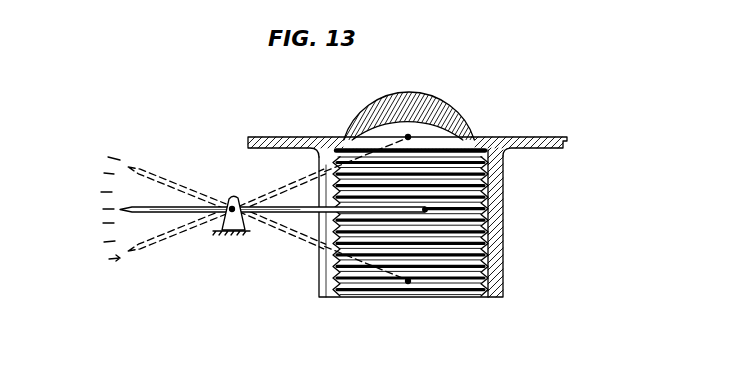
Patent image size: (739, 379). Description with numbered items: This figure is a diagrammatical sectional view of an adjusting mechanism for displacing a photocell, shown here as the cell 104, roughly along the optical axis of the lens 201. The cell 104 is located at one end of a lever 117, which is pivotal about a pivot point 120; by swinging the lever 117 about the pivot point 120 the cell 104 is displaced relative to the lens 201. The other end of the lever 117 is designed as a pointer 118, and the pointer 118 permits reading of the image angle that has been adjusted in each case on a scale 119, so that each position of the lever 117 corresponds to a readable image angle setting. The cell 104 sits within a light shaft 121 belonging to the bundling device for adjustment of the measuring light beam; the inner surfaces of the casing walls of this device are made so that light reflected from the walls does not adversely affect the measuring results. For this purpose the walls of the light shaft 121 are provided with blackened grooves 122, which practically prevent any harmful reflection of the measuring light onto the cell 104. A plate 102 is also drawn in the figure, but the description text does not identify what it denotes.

The mounting plate 102 is at (556, 137).
The cell 104 is at (411, 136).
The lever 117 is at (278, 188).
The pointer 118 is at (163, 178).
The scale 119 is at (118, 260).
The pivot point 120 is at (236, 194).
The light shaft 121 is at (503, 250).
The blackened grooves 122 is at (487, 270).
The lens 201 is at (433, 104).